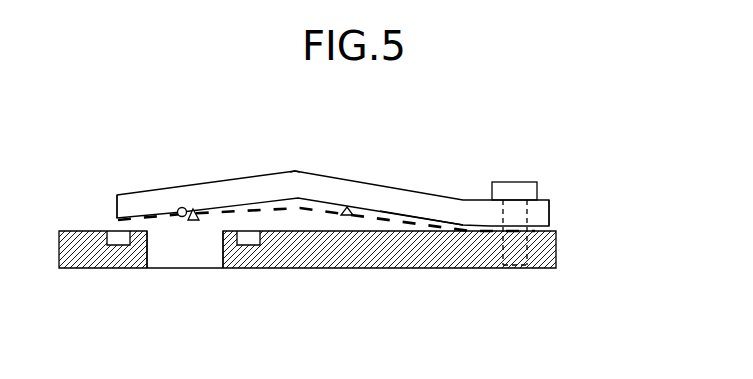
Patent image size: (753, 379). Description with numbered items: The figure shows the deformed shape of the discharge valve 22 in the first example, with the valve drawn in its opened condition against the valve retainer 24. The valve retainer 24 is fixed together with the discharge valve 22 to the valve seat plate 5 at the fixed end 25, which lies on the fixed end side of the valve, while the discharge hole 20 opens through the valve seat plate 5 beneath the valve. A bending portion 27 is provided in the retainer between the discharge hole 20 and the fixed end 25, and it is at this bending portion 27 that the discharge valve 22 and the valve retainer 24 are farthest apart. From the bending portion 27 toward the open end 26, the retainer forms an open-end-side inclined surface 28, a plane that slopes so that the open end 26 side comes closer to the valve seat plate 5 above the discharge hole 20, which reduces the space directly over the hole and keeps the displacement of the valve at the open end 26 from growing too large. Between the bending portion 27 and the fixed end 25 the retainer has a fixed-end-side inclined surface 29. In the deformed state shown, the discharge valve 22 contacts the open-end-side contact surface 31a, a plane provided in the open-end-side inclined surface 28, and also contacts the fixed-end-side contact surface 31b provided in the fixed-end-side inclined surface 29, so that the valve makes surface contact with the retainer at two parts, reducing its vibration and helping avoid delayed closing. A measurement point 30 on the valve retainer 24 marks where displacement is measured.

The valve seat plate 5 is at (428, 253).
The discharge hole 20 is at (210, 247).
The discharge valve 22 is at (145, 218).
The valve retainer 24 is at (537, 205).
The fixed end 25 is at (515, 184).
The open end 26 is at (117, 188).
The bending portion 27 is at (297, 170).
The open-end-side inclined surface 28 is at (228, 201).
The fixed-end-side inclined surface 29 is at (378, 211).
The measurement point 30 is at (180, 218).
The open-end-side contact surface 31a is at (191, 208).
The fixed-end-side contact surface 31b is at (345, 210).